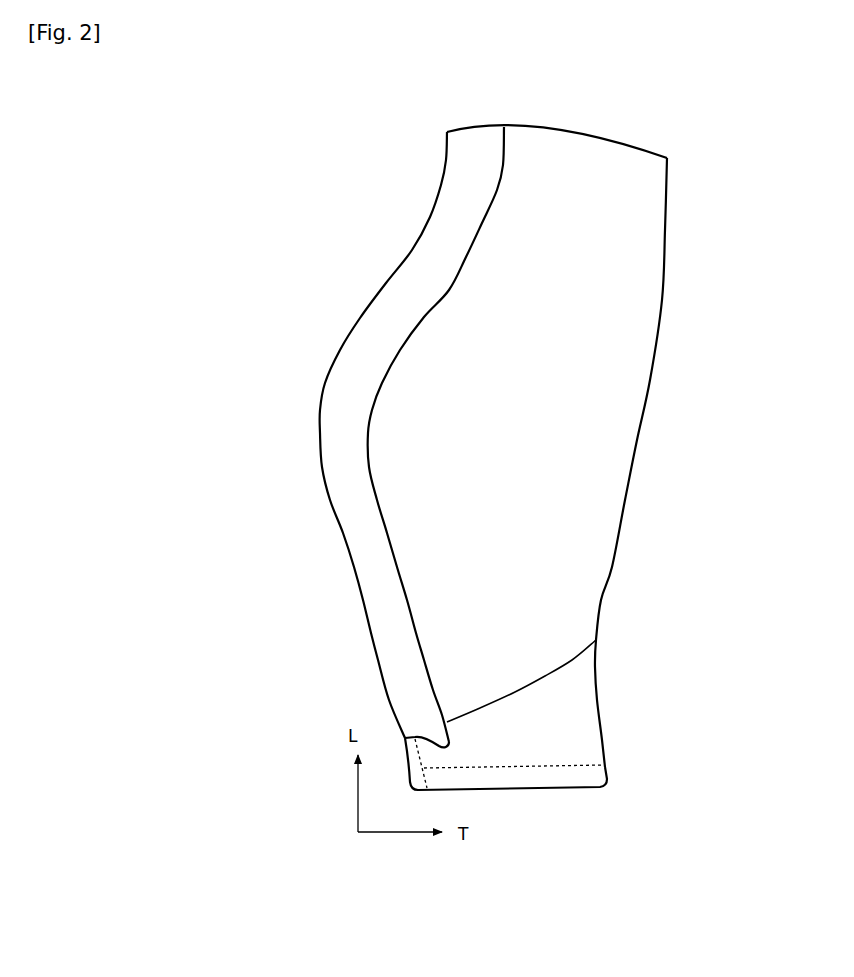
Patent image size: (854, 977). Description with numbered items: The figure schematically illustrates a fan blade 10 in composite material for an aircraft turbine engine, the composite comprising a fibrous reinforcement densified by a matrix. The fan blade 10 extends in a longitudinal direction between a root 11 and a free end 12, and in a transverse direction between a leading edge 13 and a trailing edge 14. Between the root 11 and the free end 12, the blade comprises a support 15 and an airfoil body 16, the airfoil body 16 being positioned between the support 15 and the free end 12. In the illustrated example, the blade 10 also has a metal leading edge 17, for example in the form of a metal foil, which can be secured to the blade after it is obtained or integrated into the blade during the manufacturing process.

The fan blade 10 is at (355, 222).
The root 11 is at (529, 782).
The free end 12 is at (576, 129).
The leading edge 13 is at (316, 447).
The trailing edge 14 is at (659, 357).
The support 15 is at (577, 709).
The airfoil body 16 is at (614, 453).
The metal leading edge 17 is at (346, 368).